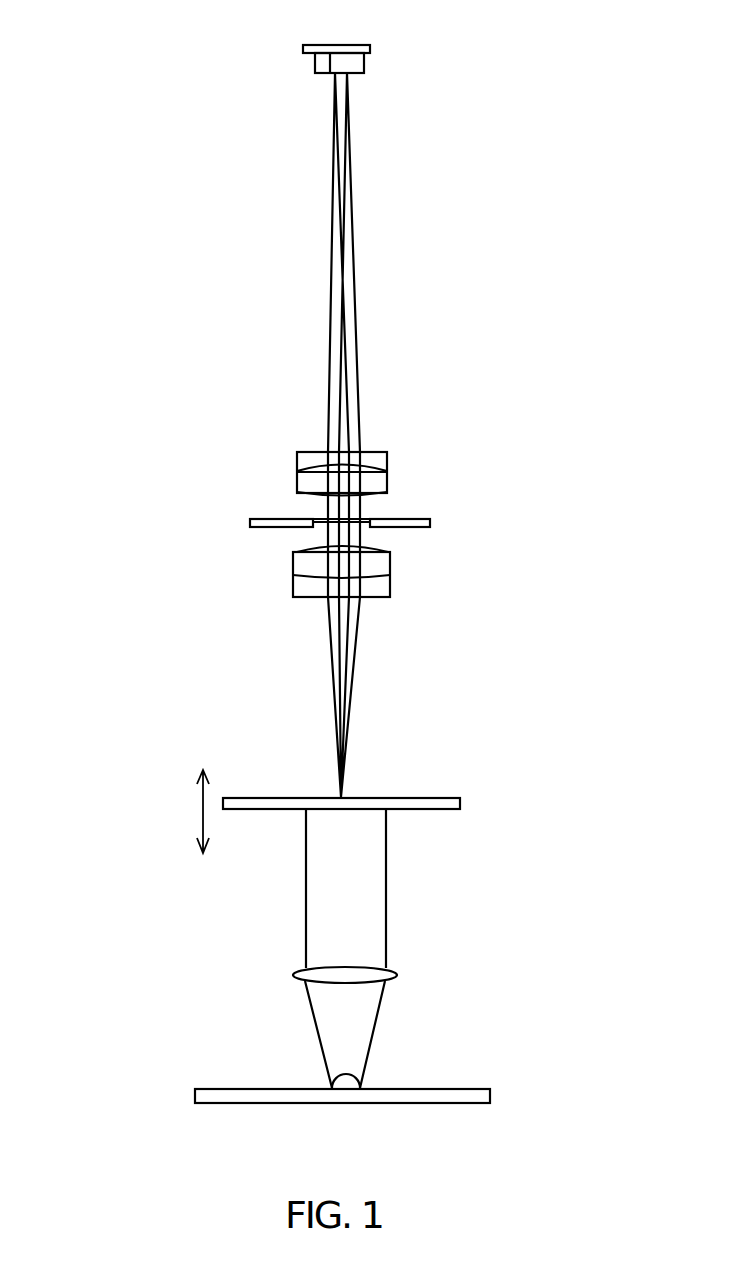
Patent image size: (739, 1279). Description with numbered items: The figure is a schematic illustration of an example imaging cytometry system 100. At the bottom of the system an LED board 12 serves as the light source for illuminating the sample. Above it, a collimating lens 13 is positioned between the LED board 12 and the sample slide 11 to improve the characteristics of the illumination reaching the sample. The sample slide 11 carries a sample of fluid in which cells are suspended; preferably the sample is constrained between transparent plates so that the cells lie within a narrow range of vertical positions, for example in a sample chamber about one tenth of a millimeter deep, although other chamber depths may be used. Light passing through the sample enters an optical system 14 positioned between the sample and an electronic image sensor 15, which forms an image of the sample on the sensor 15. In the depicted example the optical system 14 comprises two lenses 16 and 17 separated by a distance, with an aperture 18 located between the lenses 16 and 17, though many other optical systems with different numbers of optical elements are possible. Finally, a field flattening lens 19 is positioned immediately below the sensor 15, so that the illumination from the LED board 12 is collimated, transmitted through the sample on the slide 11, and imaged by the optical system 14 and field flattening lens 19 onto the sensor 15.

The imaging cytometry system 100 is at (152, 68).
The electronic image sensor 15 is at (370, 50).
The field flattening lens 19 is at (363, 66).
The optical system 14 is at (458, 437).
The lens 16 is at (295, 463).
The aperture 18 is at (280, 518).
The lens 17 is at (293, 560).
The sample slide 11 is at (447, 795).
The collimating lens 13 is at (385, 972).
The LED board 12 is at (468, 1087).